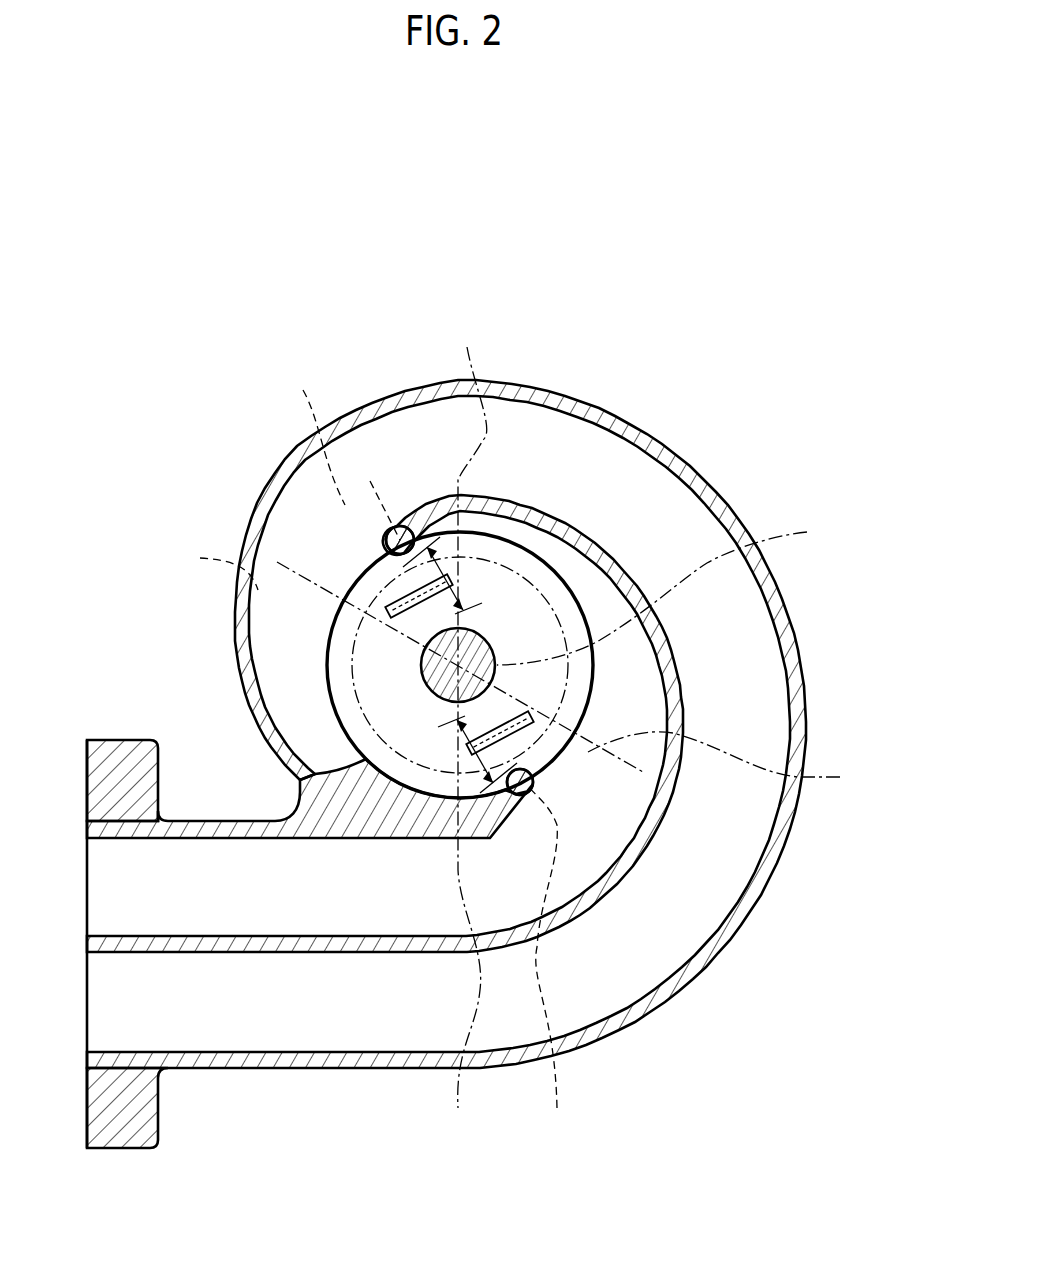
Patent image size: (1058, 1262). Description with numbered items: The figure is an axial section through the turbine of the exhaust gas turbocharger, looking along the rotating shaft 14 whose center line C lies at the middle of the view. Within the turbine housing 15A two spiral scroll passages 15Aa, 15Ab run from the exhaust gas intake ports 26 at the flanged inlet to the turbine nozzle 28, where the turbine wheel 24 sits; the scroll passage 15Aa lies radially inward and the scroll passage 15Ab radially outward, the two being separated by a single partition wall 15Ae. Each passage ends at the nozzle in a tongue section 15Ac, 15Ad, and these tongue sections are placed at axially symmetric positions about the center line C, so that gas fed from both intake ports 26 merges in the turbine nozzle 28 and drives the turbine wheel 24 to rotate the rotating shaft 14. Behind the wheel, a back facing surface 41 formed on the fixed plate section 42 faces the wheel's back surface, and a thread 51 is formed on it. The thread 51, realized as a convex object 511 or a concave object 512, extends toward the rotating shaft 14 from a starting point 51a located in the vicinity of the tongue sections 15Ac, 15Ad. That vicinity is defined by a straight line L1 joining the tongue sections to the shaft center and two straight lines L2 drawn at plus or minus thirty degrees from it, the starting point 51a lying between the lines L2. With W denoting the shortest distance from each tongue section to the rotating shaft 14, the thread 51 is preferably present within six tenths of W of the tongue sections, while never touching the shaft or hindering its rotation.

The rotating shaft 14 is at (493, 675).
The turbine housing 15A is at (646, 431).
The scroll passage 15Aa is at (366, 905).
The scroll passage 15Ab is at (366, 1017).
The tongue section 15Ac is at (527, 727).
The tongue section 15Ad is at (365, 565).
The partition wall 15Ae is at (657, 790).
The turbine wheel 24 is at (350, 640).
The exhaust gas intake port 26 is at (87, 885).
The turbine nozzle 28 is at (347, 633).
The back facing surface 41 is at (337, 703).
The plate section 42 is at (387, 697).
The thread 51 is at (383, 543).
The convex object 511 is at (400, 540).
The concave object 512 is at (520, 782).
The starting point 51a is at (410, 537).
The center line C is at (666, 591).
The straight line L1 is at (422, 755).
The straight line L2 is at (516, 728).
The shortest distance W is at (465, 585).